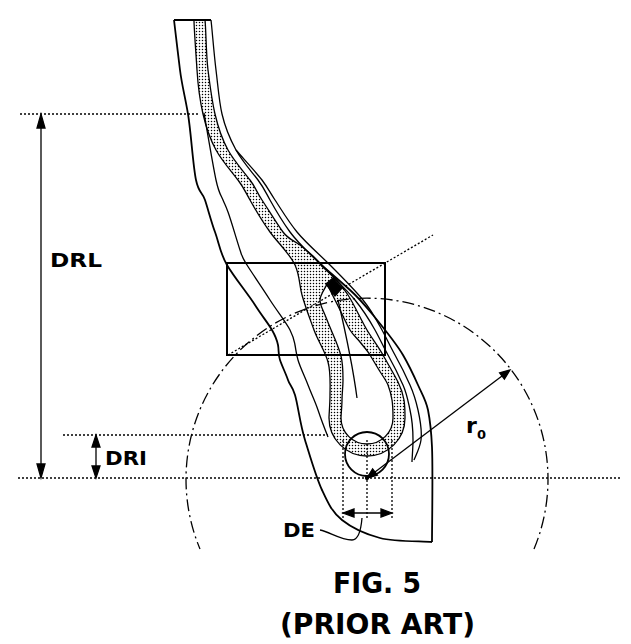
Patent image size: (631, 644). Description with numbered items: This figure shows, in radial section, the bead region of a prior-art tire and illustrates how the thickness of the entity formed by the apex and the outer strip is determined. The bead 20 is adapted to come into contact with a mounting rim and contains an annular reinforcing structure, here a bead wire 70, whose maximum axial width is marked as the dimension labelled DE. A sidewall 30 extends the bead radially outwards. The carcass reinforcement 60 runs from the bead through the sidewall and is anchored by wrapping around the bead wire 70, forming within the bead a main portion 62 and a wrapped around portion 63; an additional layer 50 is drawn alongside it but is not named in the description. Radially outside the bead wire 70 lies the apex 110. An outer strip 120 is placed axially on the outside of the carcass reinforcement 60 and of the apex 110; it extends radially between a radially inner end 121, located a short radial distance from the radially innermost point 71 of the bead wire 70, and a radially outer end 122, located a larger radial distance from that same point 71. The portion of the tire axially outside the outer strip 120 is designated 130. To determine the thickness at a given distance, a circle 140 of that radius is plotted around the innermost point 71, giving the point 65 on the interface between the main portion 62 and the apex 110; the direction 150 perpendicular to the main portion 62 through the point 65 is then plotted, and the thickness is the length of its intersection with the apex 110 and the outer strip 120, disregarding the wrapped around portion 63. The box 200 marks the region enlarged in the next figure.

The bead 20 is at (307, 457).
The sidewall 30 is at (197, 156).
The inner liner 50 is at (258, 178).
The carcass reinforcement 60 is at (213, 100).
The main portion 62 is at (348, 313).
The wrapped around portion 63 is at (330, 368).
The point of the interface 65 is at (333, 282).
The annular reinforcing structure 70 is at (360, 455).
The radially innermost point 71 is at (370, 498).
The apex 110 is at (387, 424).
The outer strip 120 is at (238, 212).
The radially inner end 121 is at (318, 428).
The radially outer end 122 is at (196, 109).
The portion of the tire axially outside the outer strip 130 is at (240, 250).
The circle 140 is at (533, 408).
The direction 150 is at (415, 245).
The box 200 is at (385, 290).